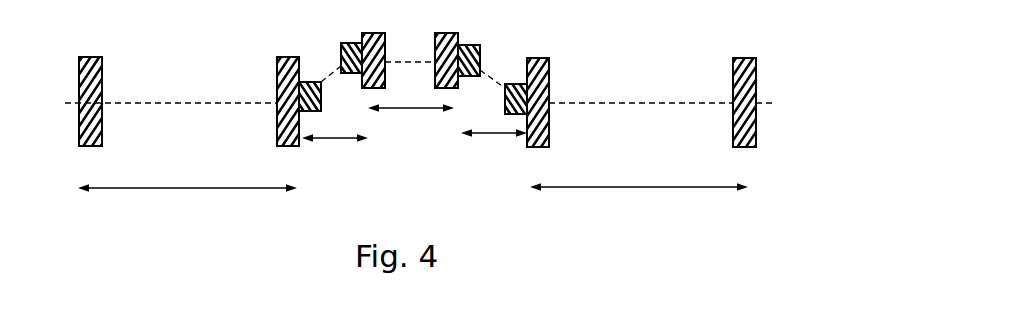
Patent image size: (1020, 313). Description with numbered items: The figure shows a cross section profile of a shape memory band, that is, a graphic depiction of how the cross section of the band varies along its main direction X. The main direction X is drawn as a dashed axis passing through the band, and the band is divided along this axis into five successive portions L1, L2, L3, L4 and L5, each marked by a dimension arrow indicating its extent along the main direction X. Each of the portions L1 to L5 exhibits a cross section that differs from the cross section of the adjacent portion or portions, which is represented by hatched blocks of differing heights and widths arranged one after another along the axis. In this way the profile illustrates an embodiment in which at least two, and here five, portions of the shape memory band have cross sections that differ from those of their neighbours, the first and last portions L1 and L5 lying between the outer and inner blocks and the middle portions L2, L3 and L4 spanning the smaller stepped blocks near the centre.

The main direction X is at (428, 84).
The first portion L1 is at (187, 172).
The second portion L2 is at (335, 152).
The third portion L3 is at (411, 124).
The fourth portion L4 is at (494, 148).
The fifth portion L5 is at (639, 167).